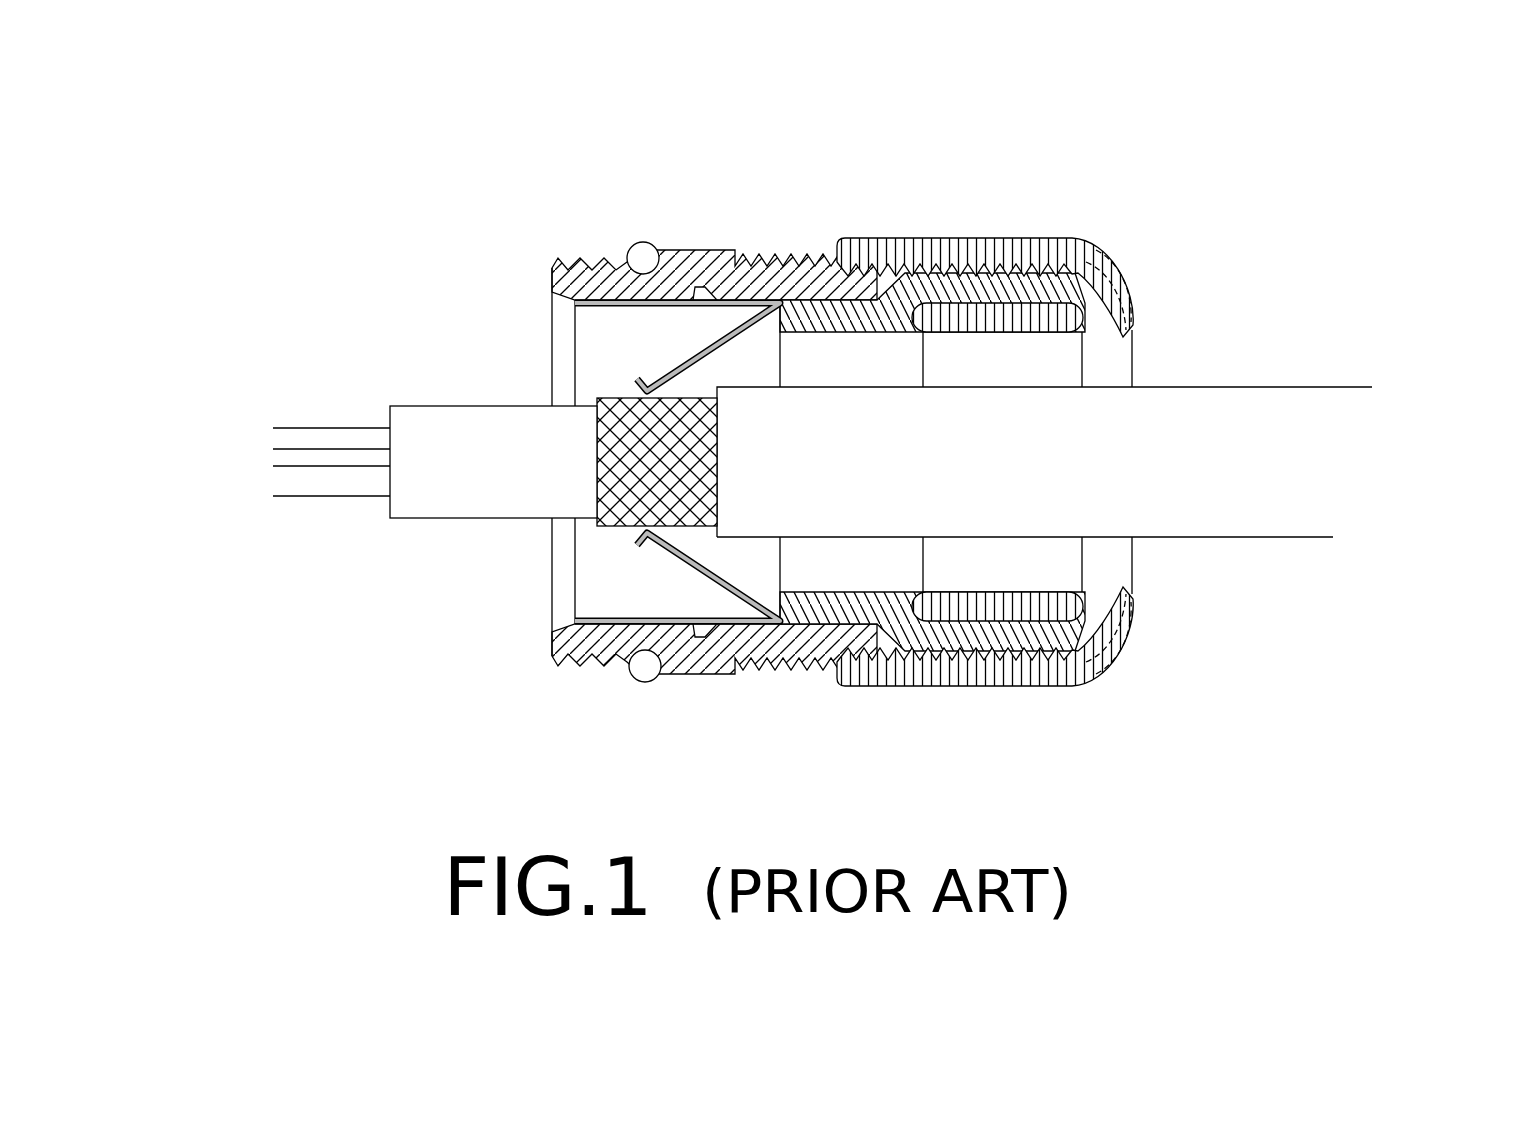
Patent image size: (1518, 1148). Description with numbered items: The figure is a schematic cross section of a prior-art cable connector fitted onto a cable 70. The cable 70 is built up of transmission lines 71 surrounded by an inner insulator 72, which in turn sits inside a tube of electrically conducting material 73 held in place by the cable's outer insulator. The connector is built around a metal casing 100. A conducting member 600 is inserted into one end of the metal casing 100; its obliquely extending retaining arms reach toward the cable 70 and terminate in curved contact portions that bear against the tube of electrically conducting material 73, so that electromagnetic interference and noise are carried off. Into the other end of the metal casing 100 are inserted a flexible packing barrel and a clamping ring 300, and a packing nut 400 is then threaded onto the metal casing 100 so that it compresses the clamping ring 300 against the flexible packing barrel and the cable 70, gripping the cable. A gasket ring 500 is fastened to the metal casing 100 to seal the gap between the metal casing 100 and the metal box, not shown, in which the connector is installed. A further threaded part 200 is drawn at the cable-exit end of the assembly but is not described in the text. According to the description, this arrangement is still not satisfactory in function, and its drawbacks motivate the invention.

The cable 70 is at (1300, 527).
The transmission lines 71 is at (317, 482).
The inner insulator 72 is at (423, 422).
The tube of electrically conducting material 73 is at (587, 532).
The metal casing 100 is at (707, 676).
The clamping nut 200 is at (1100, 577).
The clamping ring 300 is at (935, 283).
The packing nut 400 is at (1100, 268).
The gasket ring 500 is at (641, 255).
The conducting member 600 is at (602, 303).